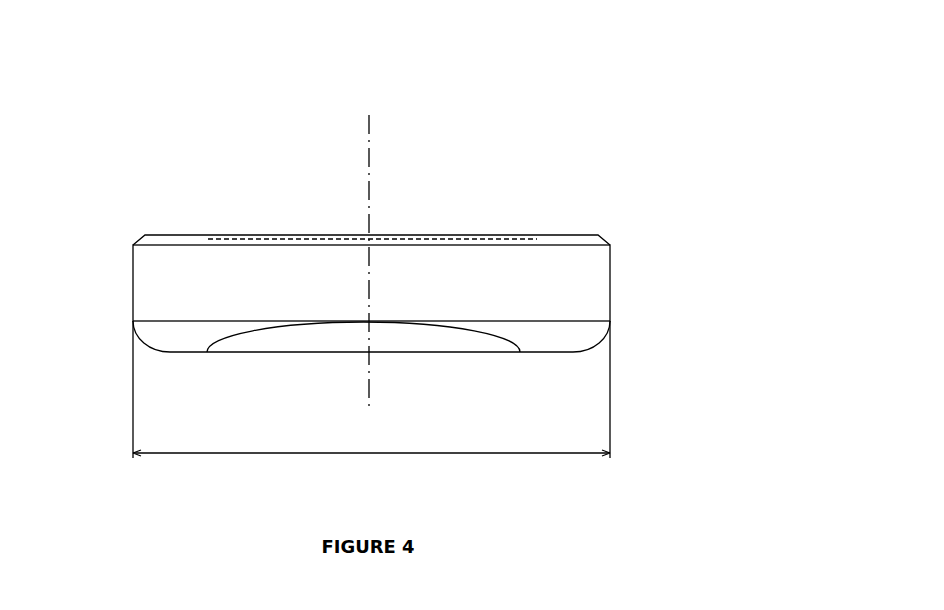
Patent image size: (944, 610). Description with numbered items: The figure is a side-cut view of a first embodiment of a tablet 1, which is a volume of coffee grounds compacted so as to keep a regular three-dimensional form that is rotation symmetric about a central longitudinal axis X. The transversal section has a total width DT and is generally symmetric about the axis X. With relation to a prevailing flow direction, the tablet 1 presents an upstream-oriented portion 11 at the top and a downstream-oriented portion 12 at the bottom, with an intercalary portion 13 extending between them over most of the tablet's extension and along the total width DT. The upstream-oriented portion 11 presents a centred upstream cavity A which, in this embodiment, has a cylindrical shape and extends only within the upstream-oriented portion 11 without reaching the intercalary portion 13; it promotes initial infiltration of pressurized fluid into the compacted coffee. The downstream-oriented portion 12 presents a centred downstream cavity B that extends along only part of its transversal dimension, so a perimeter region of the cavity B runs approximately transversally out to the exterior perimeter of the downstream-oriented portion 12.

The tablet 1 is at (322, 236).
The upstream-oriented portion 11 is at (186, 234).
The downstream-oriented portion 12 is at (186, 356).
The intercalary portion 13 is at (131, 309).
The upstream cavity A is at (504, 235).
The downstream cavity B is at (363, 337).
The central longitudinal axis X is at (370, 266).
The total width DT is at (371, 389).